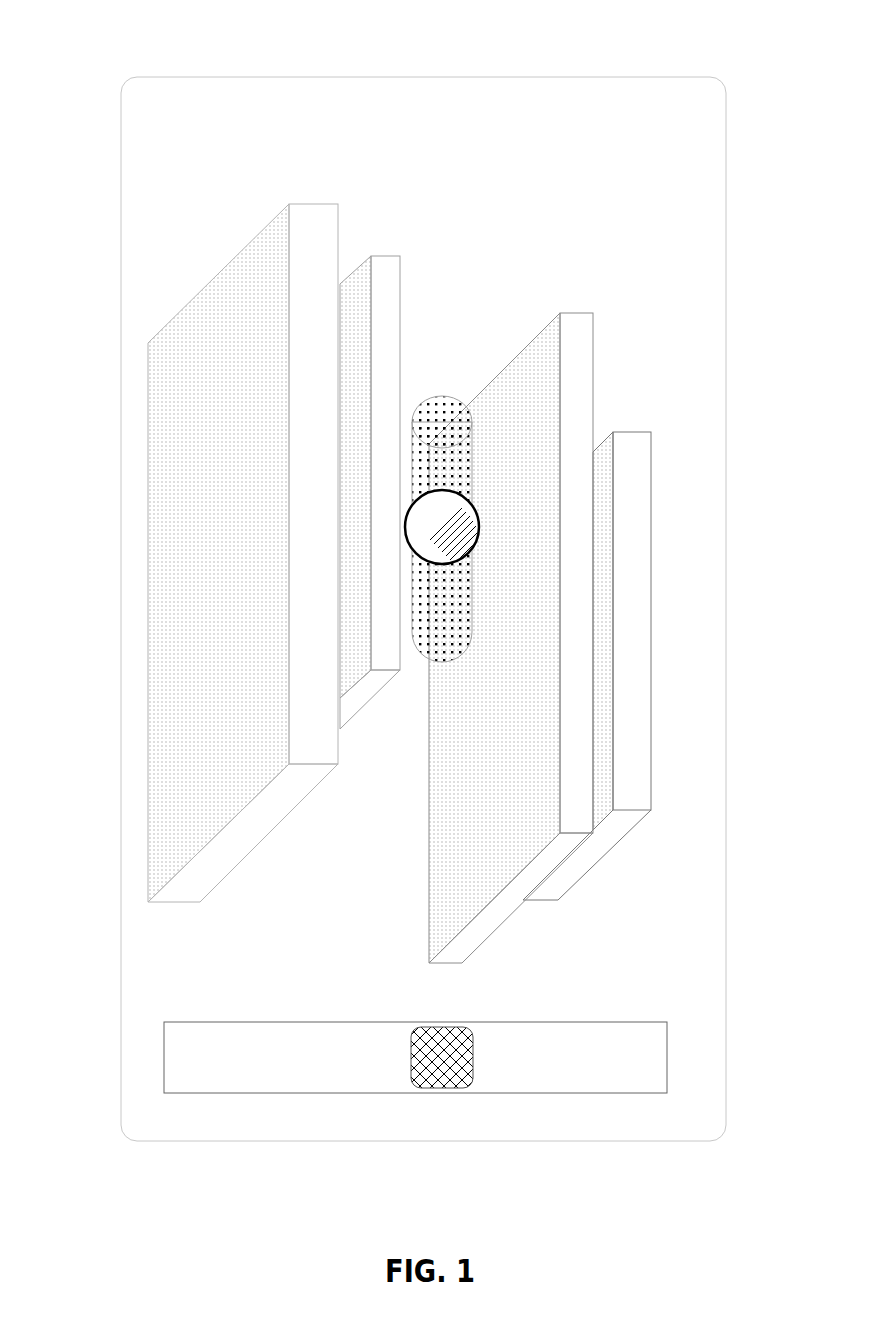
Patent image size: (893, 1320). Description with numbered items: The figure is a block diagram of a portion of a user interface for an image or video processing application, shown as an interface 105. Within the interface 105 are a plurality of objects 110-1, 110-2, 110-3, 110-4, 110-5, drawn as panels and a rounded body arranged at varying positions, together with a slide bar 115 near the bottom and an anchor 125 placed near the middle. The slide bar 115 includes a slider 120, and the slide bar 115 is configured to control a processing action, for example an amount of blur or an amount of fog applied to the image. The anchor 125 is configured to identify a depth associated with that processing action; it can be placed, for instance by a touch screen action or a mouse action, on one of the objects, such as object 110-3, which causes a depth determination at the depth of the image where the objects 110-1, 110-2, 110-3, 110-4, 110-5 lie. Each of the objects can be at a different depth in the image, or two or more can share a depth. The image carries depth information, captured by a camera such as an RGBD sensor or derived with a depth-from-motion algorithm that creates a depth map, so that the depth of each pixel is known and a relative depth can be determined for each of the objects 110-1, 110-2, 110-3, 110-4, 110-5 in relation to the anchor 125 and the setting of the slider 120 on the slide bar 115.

The interface 105 is at (163, 73).
The object 110-1 is at (168, 320).
The object 110-2 is at (367, 257).
The object 110-3 is at (442, 397).
The object 110-4 is at (573, 307).
The object 110-5 is at (633, 432).
The slide bar 115 is at (180, 1018).
The slider 120 is at (440, 1027).
The anchor 125 is at (438, 567).